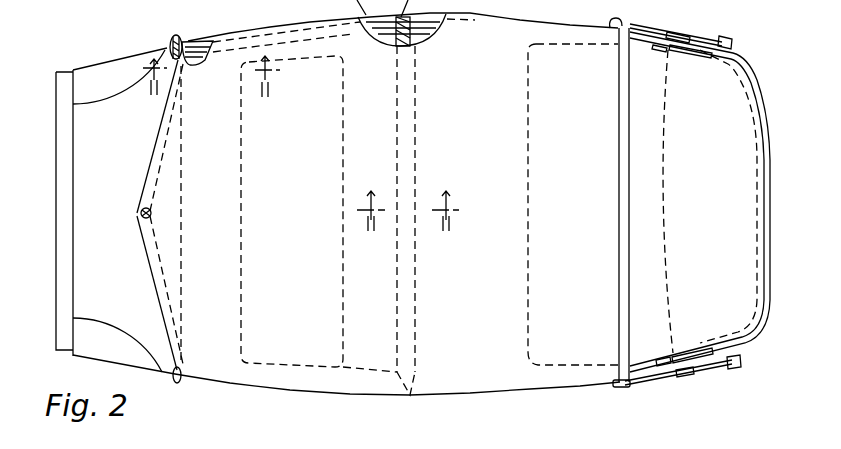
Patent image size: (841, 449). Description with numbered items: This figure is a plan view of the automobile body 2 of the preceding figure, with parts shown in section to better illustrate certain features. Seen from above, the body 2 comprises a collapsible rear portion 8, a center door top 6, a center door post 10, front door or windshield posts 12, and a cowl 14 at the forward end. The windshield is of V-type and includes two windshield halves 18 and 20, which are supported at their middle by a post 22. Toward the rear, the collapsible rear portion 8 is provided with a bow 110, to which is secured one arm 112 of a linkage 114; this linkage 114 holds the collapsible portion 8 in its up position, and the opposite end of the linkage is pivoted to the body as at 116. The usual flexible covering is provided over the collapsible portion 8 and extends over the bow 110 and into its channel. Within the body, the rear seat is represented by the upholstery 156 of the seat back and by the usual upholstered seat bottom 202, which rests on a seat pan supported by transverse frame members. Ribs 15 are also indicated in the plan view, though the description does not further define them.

The automobile body 2 is at (597, 19).
The center door top 6 is at (535, 33).
The collapsible rear portion 8 is at (738, 124).
The center door post 10 is at (212, 83).
The front door or windshield posts 12 is at (176, 37).
The cowl 14 is at (66, 170).
The ribs 15 is at (361, 220).
The windshield half 18 is at (156, 152).
The windshield half 20 is at (158, 275).
The post 22 is at (140, 216).
The bow 110 is at (630, 100).
The arm of the linkage 112 is at (648, 27).
The linkage 114 is at (680, 34).
The pivot 116 is at (726, 38).
The upholstery 156 is at (667, 196).
The upholstered seat bottom 202 is at (547, 150).